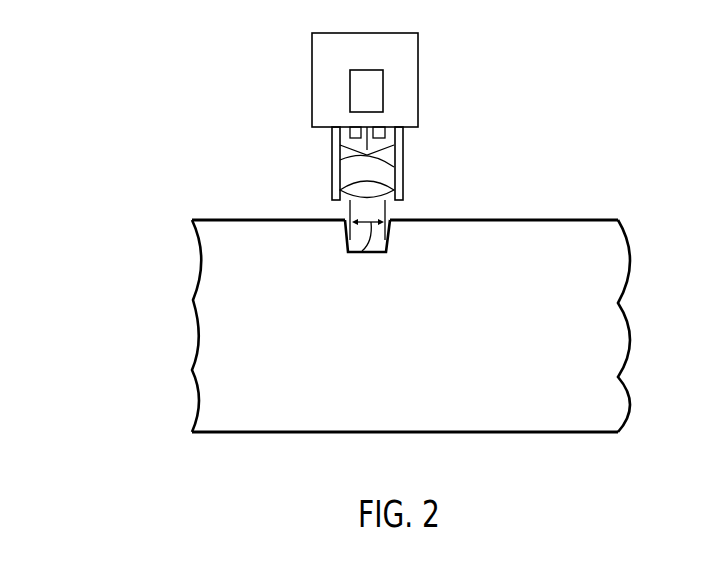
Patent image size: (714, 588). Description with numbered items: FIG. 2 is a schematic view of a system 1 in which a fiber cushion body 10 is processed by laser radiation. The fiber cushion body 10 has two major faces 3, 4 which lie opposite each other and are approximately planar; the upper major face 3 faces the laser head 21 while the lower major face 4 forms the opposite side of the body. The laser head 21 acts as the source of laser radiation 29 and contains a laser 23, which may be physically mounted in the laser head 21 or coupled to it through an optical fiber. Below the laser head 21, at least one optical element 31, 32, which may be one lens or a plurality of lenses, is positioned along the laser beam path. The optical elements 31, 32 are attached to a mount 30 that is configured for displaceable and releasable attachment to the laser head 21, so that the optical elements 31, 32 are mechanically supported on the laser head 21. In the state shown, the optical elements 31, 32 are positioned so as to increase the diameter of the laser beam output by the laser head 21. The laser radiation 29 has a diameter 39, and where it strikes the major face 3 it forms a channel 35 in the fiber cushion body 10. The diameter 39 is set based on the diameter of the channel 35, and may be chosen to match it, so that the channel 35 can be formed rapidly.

The system 1 is at (81, 73).
The major face 3 is at (242, 219).
The major face 4 is at (248, 433).
The fiber cushion body 10 is at (191, 219).
The laser head 21 is at (297, 63).
The laser 23 is at (382, 87).
The laser radiation 29 is at (388, 211).
The mount 30 is at (410, 183).
The optical element 31 is at (340, 155).
The optical element 32 is at (340, 190).
The channel 35 is at (350, 254).
The diameter 39 is at (386, 254).